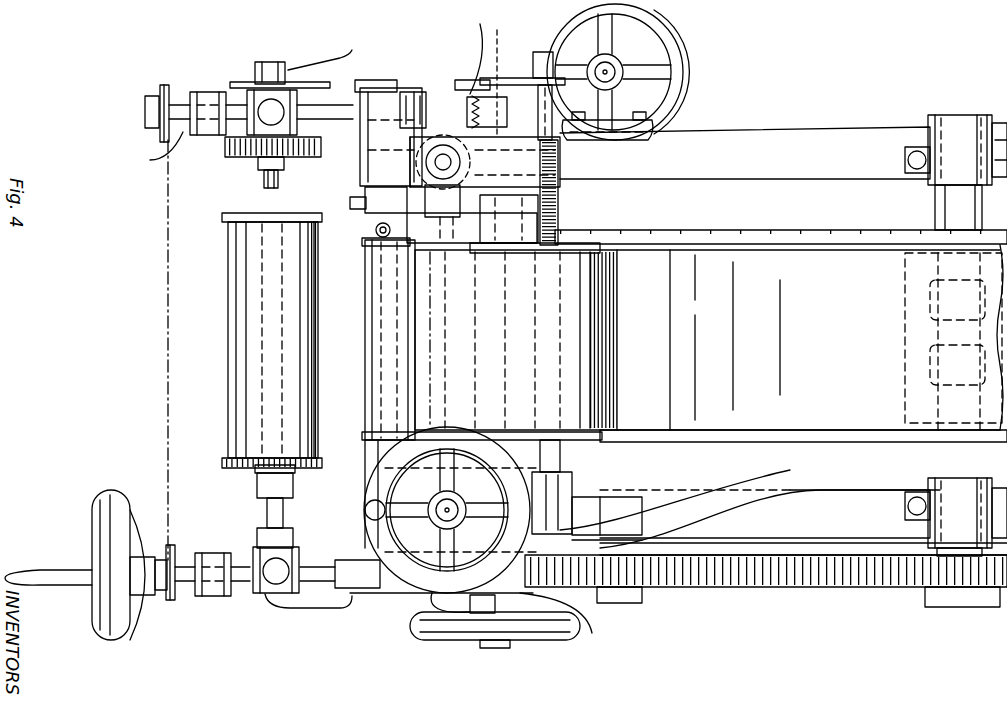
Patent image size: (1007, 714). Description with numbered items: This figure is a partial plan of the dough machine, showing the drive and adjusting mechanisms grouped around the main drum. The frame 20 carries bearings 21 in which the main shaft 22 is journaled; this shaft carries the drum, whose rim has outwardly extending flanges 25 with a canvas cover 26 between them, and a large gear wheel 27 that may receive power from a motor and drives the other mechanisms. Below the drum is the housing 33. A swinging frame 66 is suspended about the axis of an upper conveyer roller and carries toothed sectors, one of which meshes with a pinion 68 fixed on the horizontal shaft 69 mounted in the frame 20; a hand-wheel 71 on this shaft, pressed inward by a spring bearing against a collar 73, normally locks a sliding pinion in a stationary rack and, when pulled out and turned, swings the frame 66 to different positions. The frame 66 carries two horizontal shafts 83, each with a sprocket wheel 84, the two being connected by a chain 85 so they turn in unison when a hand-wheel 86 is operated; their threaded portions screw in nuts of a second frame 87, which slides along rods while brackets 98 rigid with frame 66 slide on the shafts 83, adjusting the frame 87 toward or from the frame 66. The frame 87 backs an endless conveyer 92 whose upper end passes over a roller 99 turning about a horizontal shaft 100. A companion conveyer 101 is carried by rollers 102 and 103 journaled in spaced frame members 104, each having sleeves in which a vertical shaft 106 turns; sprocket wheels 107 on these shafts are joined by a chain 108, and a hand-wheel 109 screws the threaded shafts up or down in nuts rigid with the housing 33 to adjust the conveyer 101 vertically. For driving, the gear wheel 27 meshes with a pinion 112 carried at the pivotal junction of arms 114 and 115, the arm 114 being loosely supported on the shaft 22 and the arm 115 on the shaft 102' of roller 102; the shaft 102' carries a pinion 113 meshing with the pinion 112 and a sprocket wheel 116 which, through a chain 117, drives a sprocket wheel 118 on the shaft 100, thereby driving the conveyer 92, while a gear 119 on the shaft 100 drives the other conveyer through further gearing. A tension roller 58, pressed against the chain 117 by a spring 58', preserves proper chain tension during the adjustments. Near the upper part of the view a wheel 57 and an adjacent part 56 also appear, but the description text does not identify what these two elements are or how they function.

The frame 20 is at (783, 341).
The bearings 21 is at (952, 124).
The main shaft 22 is at (936, 206).
The flanges 25 is at (776, 231).
The cover 26 is at (803, 343).
The gear wheel 27 is at (749, 588).
The housing 33 is at (378, 150).
The brake band 56 is at (690, 110).
The hand wheel 57 is at (680, 52).
The tension roller 58 is at (479, 90).
The spring 58' is at (466, 47).
The frame 66 is at (401, 108).
The pinion 68 is at (489, 74).
The shaft 69 is at (470, 110).
The hand-wheel 71 is at (532, 641).
The collar 73 is at (496, 649).
The shafts 83 is at (185, 562).
The sprocket wheel 84 is at (163, 88).
The chain 85 is at (167, 340).
The hand-wheel 86 is at (98, 530).
The frame 87 is at (208, 92).
The endless conveyer 92 is at (238, 412).
The bracket 98 is at (322, 628).
The roller 99 is at (232, 465).
The shaft 100 is at (262, 178).
The companion conveyer 101 is at (380, 322).
The roller 102 is at (564, 229).
The shaft 102' is at (551, 215).
The roller 103 is at (372, 245).
The frame members 104 is at (592, 498).
The vertical shaft 106 is at (440, 164).
The sprocket wheel 107 is at (432, 138).
The chain 108 is at (412, 330).
The hand-wheel 109 is at (560, 168).
The pinion 112 is at (645, 600).
The pinion 113 is at (592, 634).
The arm 114 is at (770, 510).
The arm 115 is at (588, 545).
The sprocket wheel 116 is at (516, 100).
The chain 117 is at (393, 80).
The sprocket wheel 118 is at (246, 80).
The gear 119 is at (226, 150).